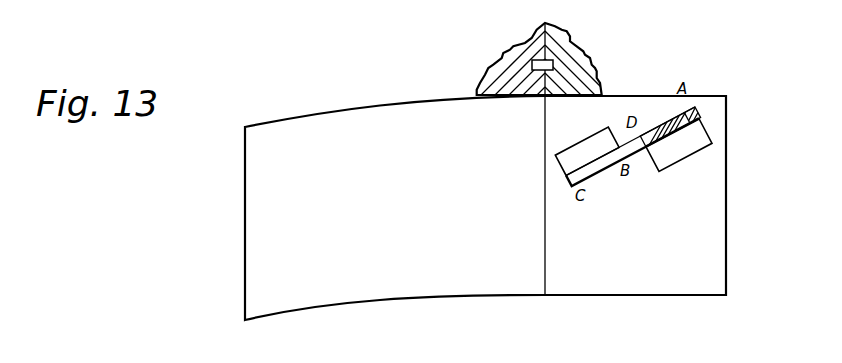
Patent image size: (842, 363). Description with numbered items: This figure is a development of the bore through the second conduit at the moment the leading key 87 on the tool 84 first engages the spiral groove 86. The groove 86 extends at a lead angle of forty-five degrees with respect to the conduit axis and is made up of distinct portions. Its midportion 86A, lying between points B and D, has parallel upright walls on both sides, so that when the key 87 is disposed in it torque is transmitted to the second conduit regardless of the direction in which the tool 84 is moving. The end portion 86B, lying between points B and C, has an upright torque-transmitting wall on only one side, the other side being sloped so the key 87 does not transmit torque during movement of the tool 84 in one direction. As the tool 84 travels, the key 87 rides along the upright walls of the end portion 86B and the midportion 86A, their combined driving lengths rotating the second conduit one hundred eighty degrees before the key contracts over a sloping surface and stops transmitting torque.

The tool 84 is at (505, 54).
The spiral groove 86 is at (648, 130).
The midportion of the groove 86A is at (637, 150).
The end portion of the groove 86B is at (571, 185).
The leading key 87 is at (693, 113).